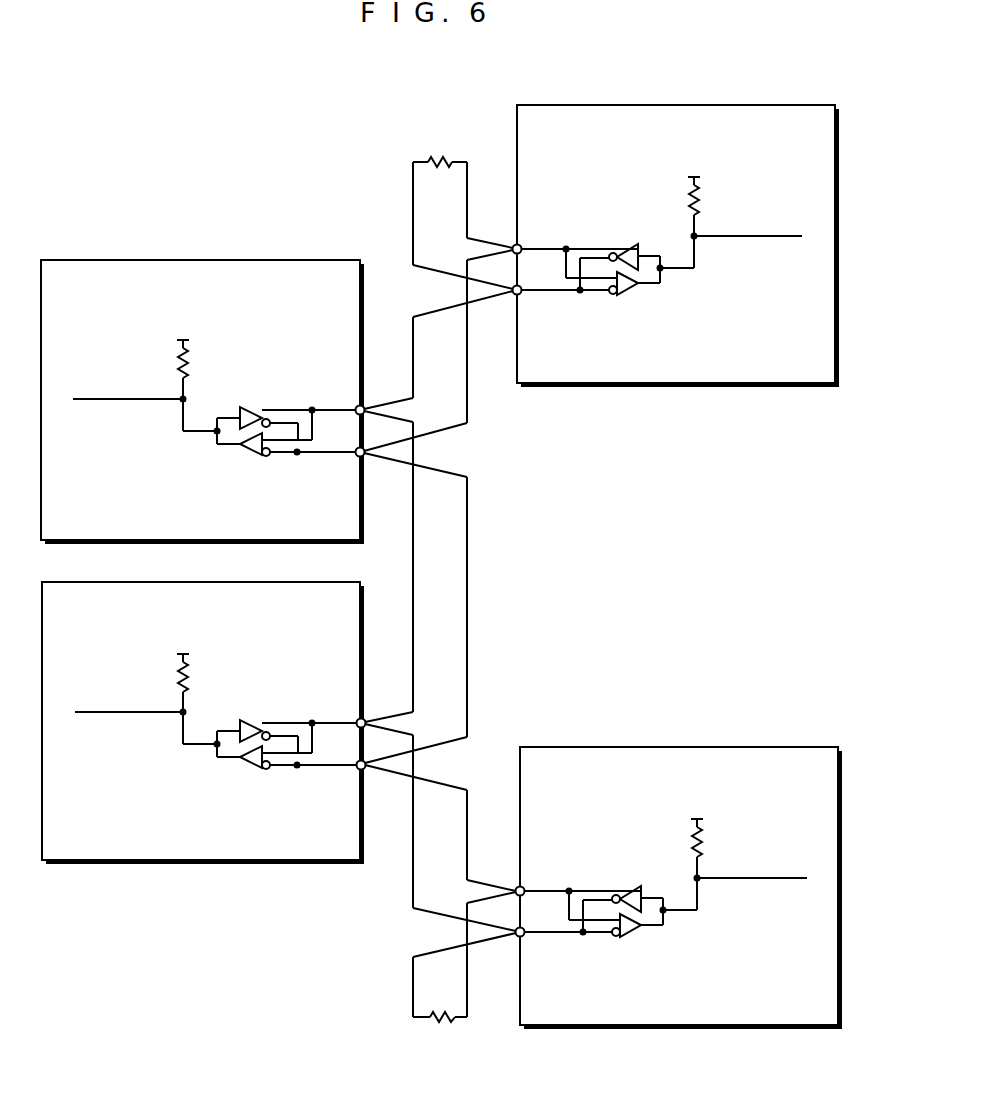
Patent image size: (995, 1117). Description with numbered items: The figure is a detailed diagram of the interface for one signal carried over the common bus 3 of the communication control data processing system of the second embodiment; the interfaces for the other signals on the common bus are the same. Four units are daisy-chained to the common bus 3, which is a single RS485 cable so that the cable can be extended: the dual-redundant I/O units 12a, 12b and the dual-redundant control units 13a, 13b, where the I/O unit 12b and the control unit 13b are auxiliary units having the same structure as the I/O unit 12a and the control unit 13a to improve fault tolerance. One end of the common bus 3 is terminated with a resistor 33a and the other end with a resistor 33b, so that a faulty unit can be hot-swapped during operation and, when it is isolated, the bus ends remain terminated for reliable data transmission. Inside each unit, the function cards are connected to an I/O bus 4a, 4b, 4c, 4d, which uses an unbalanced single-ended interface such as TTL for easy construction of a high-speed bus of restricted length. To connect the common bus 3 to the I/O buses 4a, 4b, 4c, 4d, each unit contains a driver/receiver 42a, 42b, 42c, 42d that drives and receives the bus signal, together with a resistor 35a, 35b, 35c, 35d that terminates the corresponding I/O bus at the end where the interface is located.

The common bus 3 is at (440, 591).
The I/O bus 4a is at (129, 372).
The I/O bus 4b is at (750, 208).
The I/O bus 4c is at (130, 686).
The I/O bus 4d is at (754, 850).
The I/O unit 12a is at (202, 373).
The I/O unit 12b is at (203, 704).
The control unit 13a is at (678, 216).
The control unit 13b is at (681, 858).
The resistor 33a is at (463, 193).
The resistor 33b is at (464, 991).
The resistor 35a is at (159, 355).
The resistor 35b is at (722, 192).
The resistor 35c is at (161, 669).
The resistor 35d is at (723, 834).
The driver/receiver 42a is at (286, 445).
The driver/receiver 42b is at (596, 281).
The driver/receiver 42c is at (286, 760).
The driver/receiver 42d is at (598, 926).